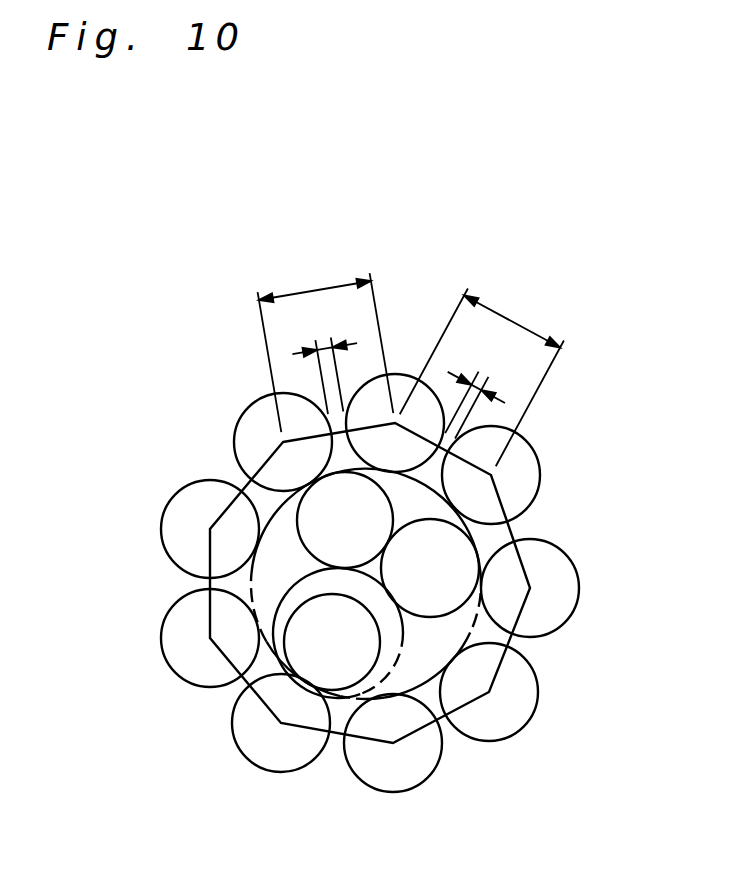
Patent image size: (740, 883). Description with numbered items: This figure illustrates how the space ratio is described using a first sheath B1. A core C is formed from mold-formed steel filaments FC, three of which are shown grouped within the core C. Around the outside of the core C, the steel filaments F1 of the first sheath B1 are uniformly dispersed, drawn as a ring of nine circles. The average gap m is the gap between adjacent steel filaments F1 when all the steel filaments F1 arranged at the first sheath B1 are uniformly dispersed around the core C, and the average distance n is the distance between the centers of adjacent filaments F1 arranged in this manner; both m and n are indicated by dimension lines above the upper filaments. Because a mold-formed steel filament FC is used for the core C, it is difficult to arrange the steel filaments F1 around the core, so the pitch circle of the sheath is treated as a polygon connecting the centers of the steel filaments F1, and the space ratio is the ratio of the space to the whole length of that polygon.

The steel filaments F1 is at (540, 470).
The first sheath B1 is at (552, 667).
The core C is at (427, 665).
The mold-formed steel filament FC is at (363, 537).
The average distance between centers of filaments n is at (317, 290).
The average gap m is at (325, 345).